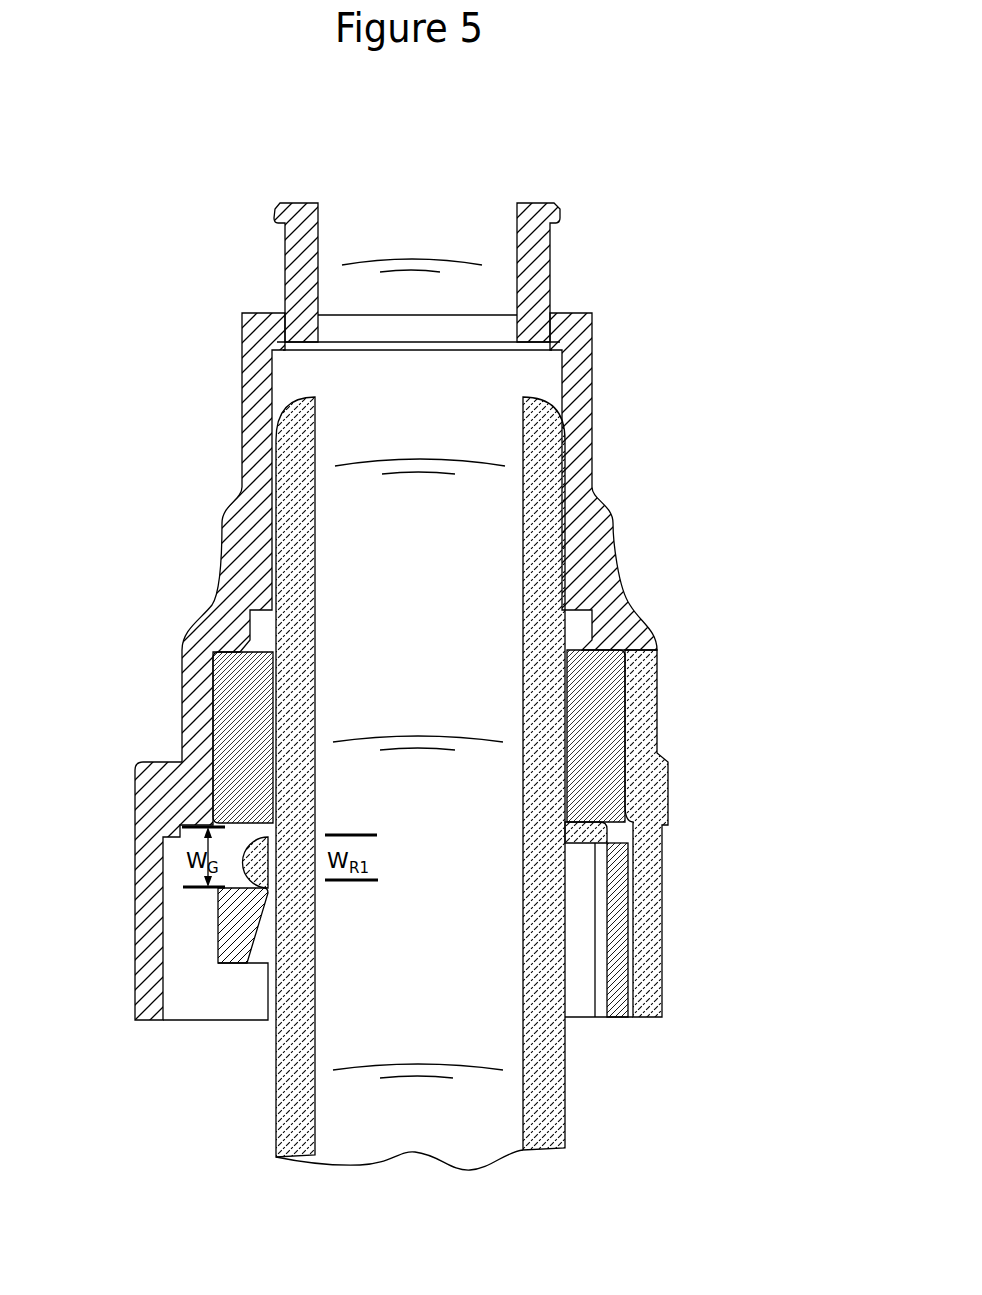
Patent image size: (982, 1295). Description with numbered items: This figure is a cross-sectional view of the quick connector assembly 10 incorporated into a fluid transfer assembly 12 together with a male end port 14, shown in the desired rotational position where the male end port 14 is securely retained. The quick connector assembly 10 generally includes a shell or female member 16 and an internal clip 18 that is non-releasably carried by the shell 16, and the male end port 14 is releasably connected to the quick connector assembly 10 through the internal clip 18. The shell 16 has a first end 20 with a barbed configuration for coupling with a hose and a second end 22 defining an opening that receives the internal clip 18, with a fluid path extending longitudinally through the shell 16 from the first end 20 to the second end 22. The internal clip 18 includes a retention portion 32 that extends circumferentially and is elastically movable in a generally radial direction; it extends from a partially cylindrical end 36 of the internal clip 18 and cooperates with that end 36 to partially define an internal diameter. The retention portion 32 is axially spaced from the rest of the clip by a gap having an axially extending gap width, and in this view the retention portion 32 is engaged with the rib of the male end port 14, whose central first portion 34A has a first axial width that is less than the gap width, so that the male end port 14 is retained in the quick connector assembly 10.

The quick connector assembly 10 is at (602, 462).
The fluid transfer assembly 12 is at (772, 496).
The male end port 14 is at (567, 1092).
The shell 16 is at (246, 412).
The internal clip 18 is at (623, 712).
The first end 20 is at (550, 260).
The second end 22 is at (662, 927).
The retention portion 32 is at (227, 912).
The first portion of the rib 34A is at (266, 838).
The partially cylindrical end 36 is at (617, 957).